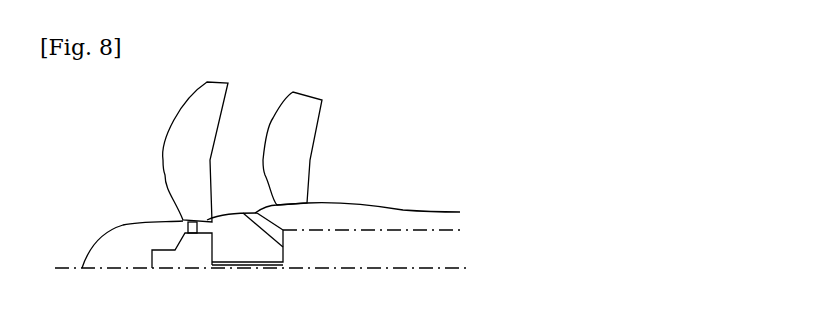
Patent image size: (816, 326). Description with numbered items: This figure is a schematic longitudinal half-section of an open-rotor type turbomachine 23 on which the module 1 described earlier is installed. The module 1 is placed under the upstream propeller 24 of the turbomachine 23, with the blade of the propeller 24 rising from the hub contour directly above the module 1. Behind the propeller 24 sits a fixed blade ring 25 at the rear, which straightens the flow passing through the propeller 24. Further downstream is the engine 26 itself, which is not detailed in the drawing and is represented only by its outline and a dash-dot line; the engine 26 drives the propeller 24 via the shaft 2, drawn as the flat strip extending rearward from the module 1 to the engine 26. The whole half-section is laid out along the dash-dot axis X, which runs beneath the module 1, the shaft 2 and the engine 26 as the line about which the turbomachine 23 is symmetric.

The module 1 is at (198, 243).
The shaft 2 is at (242, 267).
The open-rotor turbomachine 23 is at (259, 166).
The upstream propeller 24 is at (192, 133).
The fixed blade ring 25 is at (292, 140).
The engine 26 is at (332, 248).
The axis of rotation X is at (63, 270).